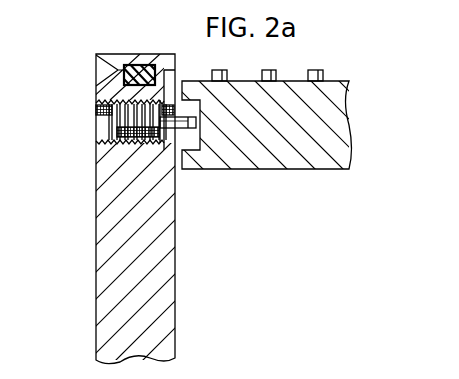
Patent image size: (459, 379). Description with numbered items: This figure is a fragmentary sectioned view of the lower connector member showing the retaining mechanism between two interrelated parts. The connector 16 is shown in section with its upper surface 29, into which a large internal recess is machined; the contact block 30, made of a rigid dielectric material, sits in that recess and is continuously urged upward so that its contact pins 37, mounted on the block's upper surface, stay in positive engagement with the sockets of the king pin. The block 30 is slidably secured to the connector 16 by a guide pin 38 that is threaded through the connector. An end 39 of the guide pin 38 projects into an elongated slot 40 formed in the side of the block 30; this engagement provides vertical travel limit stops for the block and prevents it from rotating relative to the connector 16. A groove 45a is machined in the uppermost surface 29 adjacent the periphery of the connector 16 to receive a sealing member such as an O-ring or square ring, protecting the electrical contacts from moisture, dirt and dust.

The connector 16 is at (176, 245).
The upper surface 29 is at (171, 70).
The contact block 30 is at (333, 117).
The contact pins 37 is at (317, 70).
The guide pin 38 is at (115, 119).
The end of the pin 39 is at (166, 112).
The elongated slot 40 is at (202, 108).
The groove 45a is at (127, 64).